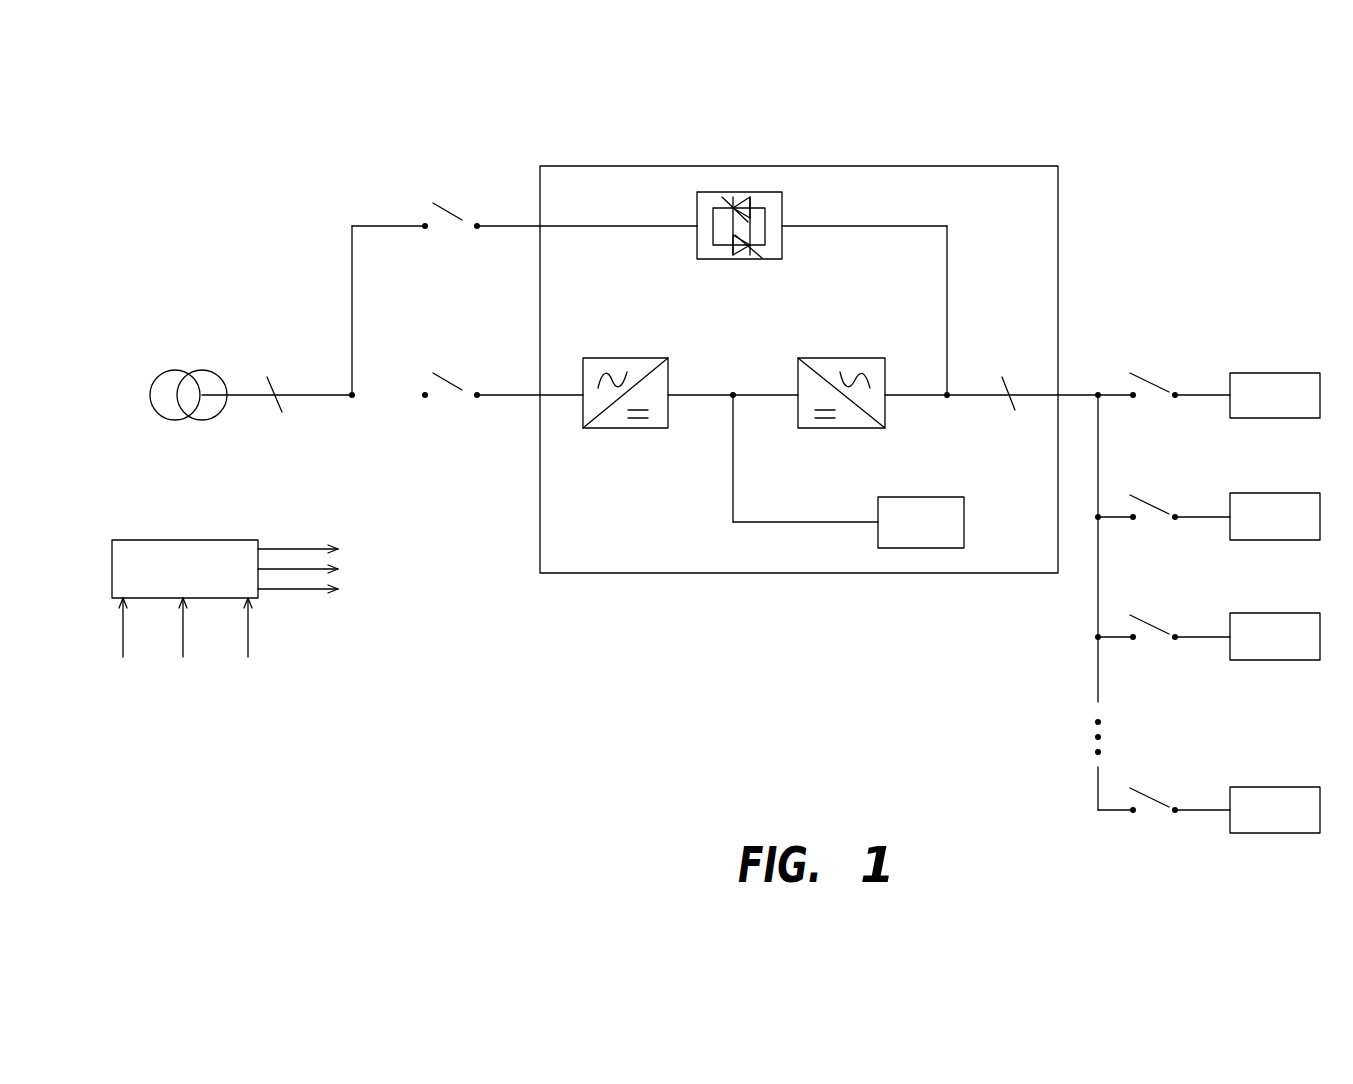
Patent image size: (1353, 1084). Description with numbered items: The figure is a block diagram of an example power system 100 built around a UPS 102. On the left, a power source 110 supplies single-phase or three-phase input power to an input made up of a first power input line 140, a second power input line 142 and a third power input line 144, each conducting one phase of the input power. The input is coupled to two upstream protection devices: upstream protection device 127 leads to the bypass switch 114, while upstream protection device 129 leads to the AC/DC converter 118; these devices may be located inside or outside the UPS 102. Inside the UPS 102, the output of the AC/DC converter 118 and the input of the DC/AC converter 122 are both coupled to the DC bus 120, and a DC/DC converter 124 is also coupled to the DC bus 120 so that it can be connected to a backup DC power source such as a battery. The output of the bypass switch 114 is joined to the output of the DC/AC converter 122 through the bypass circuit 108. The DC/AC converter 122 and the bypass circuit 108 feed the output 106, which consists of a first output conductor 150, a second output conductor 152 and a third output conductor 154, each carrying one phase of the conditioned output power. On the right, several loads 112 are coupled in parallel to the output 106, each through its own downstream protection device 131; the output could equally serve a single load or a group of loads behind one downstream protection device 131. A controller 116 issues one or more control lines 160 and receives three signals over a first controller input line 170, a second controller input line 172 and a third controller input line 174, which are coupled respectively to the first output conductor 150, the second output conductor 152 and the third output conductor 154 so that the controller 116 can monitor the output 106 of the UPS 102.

The power system 100 is at (1163, 158).
The UPS 102 is at (538, 188).
The output 106 is at (1085, 392).
The bypass circuit 108 is at (948, 268).
The power source 110 is at (178, 420).
The load 112 is at (1268, 373).
The bypass switch 114 is at (727, 262).
The controller 116 is at (190, 538).
The AC/DC converter 118 is at (605, 430).
The DC bus 120 is at (733, 386).
The DC/AC converter 122 is at (835, 430).
The DC/DC converter 124 is at (900, 548).
The upstream protection device 127 is at (461, 222).
The upstream protection device 129 is at (461, 392).
The downstream protection device 131 is at (1150, 378).
The first power input line 140 is at (185, 346).
The second power input line 142 is at (185, 346).
The third power input line 144 is at (270, 378).
The first output conductor 150 is at (1117, 345).
The second output conductor 152 is at (1117, 345).
The third output conductor 154 is at (1008, 392).
The control line 160 is at (302, 548).
The first controller input line 170 is at (123, 650).
The second controller input line 172 is at (183, 648).
The third controller input line 174 is at (248, 650).